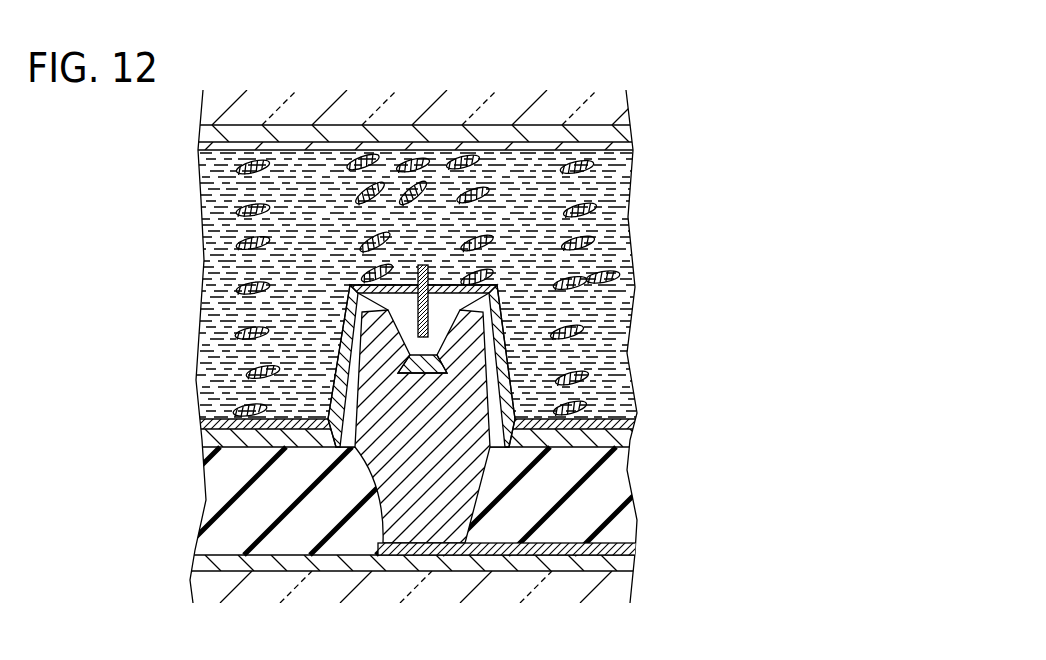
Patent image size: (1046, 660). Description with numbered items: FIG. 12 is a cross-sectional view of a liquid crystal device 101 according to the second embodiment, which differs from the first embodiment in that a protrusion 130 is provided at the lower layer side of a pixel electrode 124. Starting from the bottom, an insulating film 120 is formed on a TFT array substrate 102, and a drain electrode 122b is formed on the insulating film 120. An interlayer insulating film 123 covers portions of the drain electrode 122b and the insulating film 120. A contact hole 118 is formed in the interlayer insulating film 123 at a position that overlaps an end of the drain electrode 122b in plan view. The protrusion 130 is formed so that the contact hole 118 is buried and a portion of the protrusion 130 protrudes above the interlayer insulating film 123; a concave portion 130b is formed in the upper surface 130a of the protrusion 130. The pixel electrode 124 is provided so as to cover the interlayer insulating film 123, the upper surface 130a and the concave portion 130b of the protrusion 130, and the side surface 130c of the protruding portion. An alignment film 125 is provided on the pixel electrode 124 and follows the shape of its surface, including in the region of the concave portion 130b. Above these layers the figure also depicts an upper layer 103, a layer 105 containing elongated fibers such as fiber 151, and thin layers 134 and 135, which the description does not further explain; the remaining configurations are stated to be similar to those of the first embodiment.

The liquid crystal device 101 is at (655, 80).
The TFT array substrate 102 is at (618, 583).
The upper layer 103 is at (627, 107).
The fiber-containing insulating layer 105 is at (630, 207).
The contact hole 118 is at (377, 478).
The insulating film 120 is at (637, 563).
The drain electrode 122b is at (632, 548).
The interlayer insulating film 123 is at (613, 480).
The pixel electrode 124 is at (635, 440).
The alignment film 125 is at (640, 423).
The protrusion 130 is at (428, 293).
The upper surface 130a is at (360, 293).
The concave portion 130b is at (416, 262).
The side surface 130c is at (345, 340).
The barrier layer 134 is at (628, 135).
The interface layer 135 is at (632, 150).
The fiber 151 is at (603, 277).